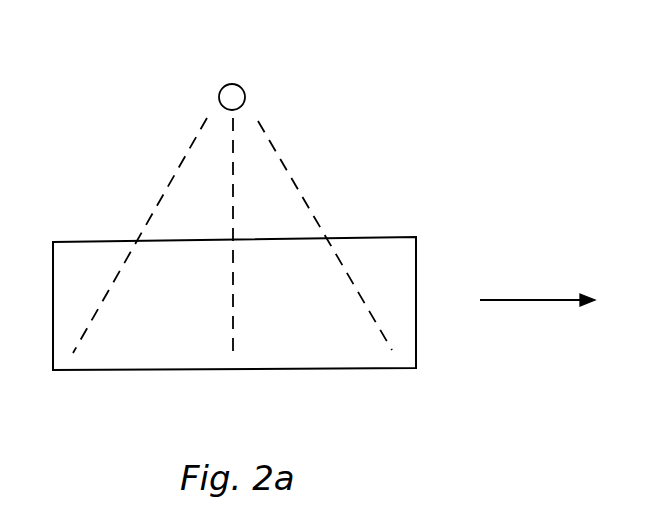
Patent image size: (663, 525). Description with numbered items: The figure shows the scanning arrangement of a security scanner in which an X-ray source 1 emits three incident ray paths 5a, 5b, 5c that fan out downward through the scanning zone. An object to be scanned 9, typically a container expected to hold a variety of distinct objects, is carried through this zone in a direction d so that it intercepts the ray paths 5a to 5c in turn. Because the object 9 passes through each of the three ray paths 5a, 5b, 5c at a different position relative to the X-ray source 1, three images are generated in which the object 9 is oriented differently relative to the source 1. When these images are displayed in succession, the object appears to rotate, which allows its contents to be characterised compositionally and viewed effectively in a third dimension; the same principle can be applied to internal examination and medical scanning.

The X-ray source 1 is at (227, 94).
The ray path 5a is at (162, 197).
The ray path 5b is at (233, 322).
The ray path 5c is at (302, 193).
The object to be scanned 9 is at (323, 337).
The direction d is at (537, 285).